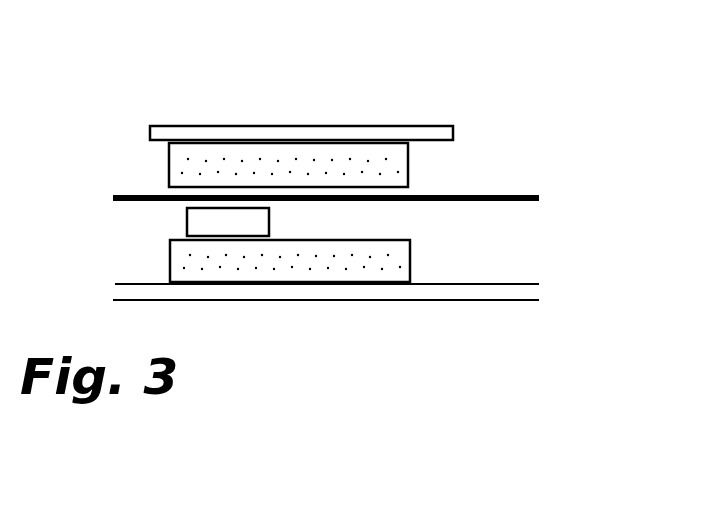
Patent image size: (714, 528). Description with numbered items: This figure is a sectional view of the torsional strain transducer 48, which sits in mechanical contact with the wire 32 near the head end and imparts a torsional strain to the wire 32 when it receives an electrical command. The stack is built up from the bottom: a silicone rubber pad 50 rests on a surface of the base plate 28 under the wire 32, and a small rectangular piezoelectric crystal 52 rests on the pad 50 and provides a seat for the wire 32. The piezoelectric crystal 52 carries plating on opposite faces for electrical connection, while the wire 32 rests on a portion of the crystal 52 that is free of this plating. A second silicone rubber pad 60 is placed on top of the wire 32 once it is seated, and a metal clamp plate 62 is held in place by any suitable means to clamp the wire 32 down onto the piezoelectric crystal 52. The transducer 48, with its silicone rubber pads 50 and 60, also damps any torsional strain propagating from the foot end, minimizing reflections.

The base plate 28 is at (511, 284).
The wire 32 is at (133, 196).
The transducer 48 is at (350, 69).
The silicone rubber pad 50 is at (410, 253).
The piezoelectric crystal 52 is at (187, 232).
The second silicone rubber pad 60 is at (408, 170).
The metal clamp plate 62 is at (223, 126).